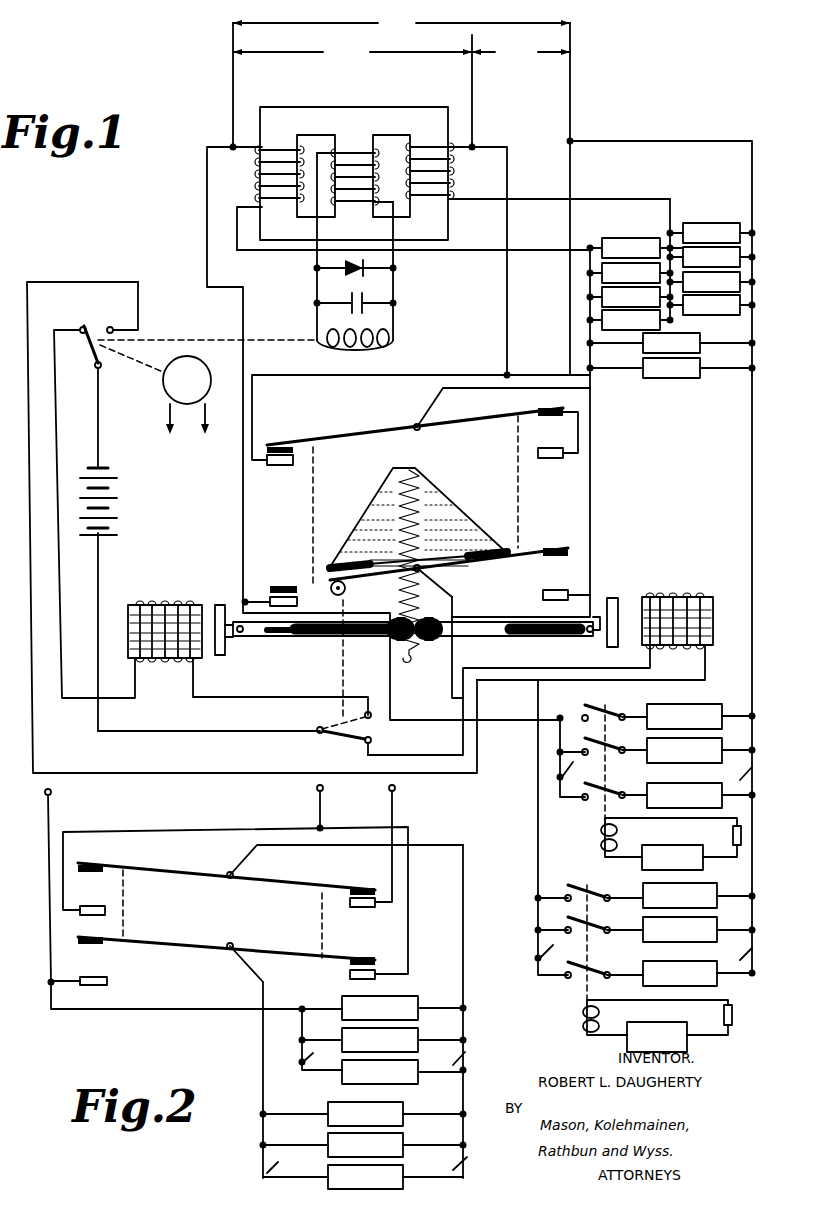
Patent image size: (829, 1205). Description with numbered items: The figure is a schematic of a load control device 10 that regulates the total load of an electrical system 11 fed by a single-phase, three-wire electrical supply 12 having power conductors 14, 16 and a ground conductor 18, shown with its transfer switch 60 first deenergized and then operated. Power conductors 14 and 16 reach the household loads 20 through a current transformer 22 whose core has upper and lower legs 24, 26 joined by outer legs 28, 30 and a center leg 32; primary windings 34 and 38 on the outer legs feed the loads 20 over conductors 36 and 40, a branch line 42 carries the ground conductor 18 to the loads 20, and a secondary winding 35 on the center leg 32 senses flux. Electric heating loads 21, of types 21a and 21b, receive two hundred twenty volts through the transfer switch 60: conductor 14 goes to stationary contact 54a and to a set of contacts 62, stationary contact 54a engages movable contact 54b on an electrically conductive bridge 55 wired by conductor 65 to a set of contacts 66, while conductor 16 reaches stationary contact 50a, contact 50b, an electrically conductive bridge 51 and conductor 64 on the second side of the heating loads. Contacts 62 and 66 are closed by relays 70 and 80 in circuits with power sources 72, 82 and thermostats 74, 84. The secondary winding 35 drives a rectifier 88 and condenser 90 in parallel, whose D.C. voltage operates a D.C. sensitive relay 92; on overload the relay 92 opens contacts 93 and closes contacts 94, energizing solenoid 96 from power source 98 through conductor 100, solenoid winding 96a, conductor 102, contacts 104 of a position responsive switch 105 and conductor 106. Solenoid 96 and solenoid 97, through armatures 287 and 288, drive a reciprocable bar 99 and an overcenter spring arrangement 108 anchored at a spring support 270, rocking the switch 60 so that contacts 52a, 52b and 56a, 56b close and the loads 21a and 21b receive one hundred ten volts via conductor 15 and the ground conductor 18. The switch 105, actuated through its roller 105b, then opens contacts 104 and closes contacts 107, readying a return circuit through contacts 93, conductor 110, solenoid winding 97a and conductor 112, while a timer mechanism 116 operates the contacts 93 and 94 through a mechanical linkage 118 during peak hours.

In FIG. 1, the load control device 10 is at (150, 232).
In FIG. 1, the electrical system 11 is at (673, 455).
In FIG. 1, the electrical supply 12 is at (216, 47).
In FIG. 1, the power conductor 14 is at (232, 84).
In FIG. 2, the power conductor 14 is at (45, 800).
In FIG. 1, the conductor 15 is at (592, 490).
In FIG. 2, the conductor 15 is at (410, 936).
In FIG. 1, the power conductor 16 is at (470, 80).
In FIG. 2, the power conductor 16 is at (316, 805).
In FIG. 1, the ground conductor 18 is at (571, 102).
In FIG. 2, the ground conductor 18 is at (395, 810).
In FIG. 1, the household loads 20 is at (691, 210).
In FIG. 1, the electric heating loads 21 is at (694, 706).
In FIG. 2, the electric heating loads 21 is at (428, 1003).
In FIG. 1, the heating loads 21a is at (640, 742).
In FIG. 1, the heating loads 21b is at (634, 924).
In FIG. 1, the current transformer 22 is at (362, 131).
In FIG. 1, the upper leg 24 is at (332, 107).
In FIG. 1, the lower leg 26 is at (405, 240).
In FIG. 1, the outer leg 28 is at (272, 218).
In FIG. 1, the outer leg 30 is at (452, 212).
In FIG. 1, the center leg 32 is at (358, 175).
In FIG. 1, the primary winding 34 is at (289, 143).
In FIG. 1, the secondary winding 35 is at (386, 184).
In FIG. 1, the conductor 36 is at (546, 248).
In FIG. 1, the primary winding 38 is at (436, 142).
In FIG. 1, the conductor 40 is at (554, 198).
In FIG. 1, the branch line 42 is at (671, 141).
In FIG. 1, the stationary contact 50a is at (264, 464).
In FIG. 2, the stationary contact 50a is at (103, 907).
In FIG. 1, the contact 50b is at (264, 446).
In FIG. 2, the contact 50b is at (79, 863).
In FIG. 1, the electrically conductive bridge 51 is at (365, 425).
In FIG. 2, the electrically conductive bridge 51 is at (240, 885).
In FIG. 1, the contact 52a is at (542, 459).
In FIG. 2, the contact 52a is at (358, 908).
In FIG. 1, the contact 52b is at (562, 416).
In FIG. 2, the contact 52b is at (376, 889).
In FIG. 1, the stationary contact 54a is at (300, 598).
In FIG. 2, the stationary contact 54a is at (107, 980).
In FIG. 1, the movable contact 54b is at (264, 586).
In FIG. 2, the movable contact 54b is at (94, 946).
In FIG. 1, the electrically conductive bridge 55 is at (512, 546).
In FIG. 2, the electrically conductive bridge 55 is at (258, 948).
In FIG. 1, the contact 56a is at (540, 595).
In FIG. 2, the contact 56a is at (350, 976).
In FIG. 1, the contact 56b is at (554, 556).
In FIG. 2, the contact 56b is at (350, 962).
In FIG. 1, the transfer switch 60 is at (414, 420).
In FIG. 2, the transfer switch 60 is at (200, 862).
In FIG. 1, the set of contacts 62 is at (589, 746).
In FIG. 1, the conductor 64 is at (750, 488).
In FIG. 2, the conductor 64 is at (466, 978).
In FIG. 1, the conductor 65 is at (454, 686).
In FIG. 2, the conductor 65 is at (262, 1056).
In FIG. 1, the set of contacts 66 is at (543, 829).
In FIG. 1, the relay 70 is at (600, 848).
In FIG. 1, the power source 72 is at (678, 843).
In FIG. 1, the thermostat 74 is at (732, 835).
In FIG. 1, the relay 80 is at (582, 1038).
In FIG. 1, the power source 82 is at (676, 1019).
In FIG. 1, the thermostat 84 is at (732, 1024).
In FIG. 1, the rectifier 88 is at (355, 279).
In FIG. 1, the condenser 90 is at (362, 308).
In FIG. 1, the D.C. sensitive relay 92 is at (366, 332).
In FIG. 1, the contacts 93 is at (84, 326).
In FIG. 1, the contacts 94 is at (102, 322).
In FIG. 1, the solenoid 96 is at (708, 600).
In FIG. 1, the solenoid winding 96a is at (685, 594).
In FIG. 1, the solenoid 97 is at (134, 602).
In FIG. 1, the solenoid winding 97a is at (180, 604).
In FIG. 1, the power source 98 is at (116, 489).
In FIG. 1, the reciprocable bar 99 is at (292, 643).
In FIG. 1, the conductor 100 is at (155, 772).
In FIG. 1, the conductor 102 is at (537, 670).
In FIG. 1, the contacts 104 is at (372, 741).
In FIG. 1, the position responsive switch 105 is at (348, 686).
In FIG. 1, the roller 105b is at (346, 588).
In FIG. 1, the conductor 106 is at (210, 728).
In FIG. 1, the contacts 107 is at (370, 707).
In FIG. 1, the overcenter spring arrangement 108 is at (398, 540).
In FIG. 1, the conductor 110 is at (94, 514).
In FIG. 1, the conductor 112 is at (285, 696).
In FIG. 1, the timer mechanism 116 is at (165, 392).
In FIG. 1, the mechanical linkage 118 is at (144, 364).
In FIG. 1, the spring support 270 is at (442, 506).
In FIG. 1, the armature 287 is at (614, 597).
In FIG. 1, the armature 288 is at (232, 594).